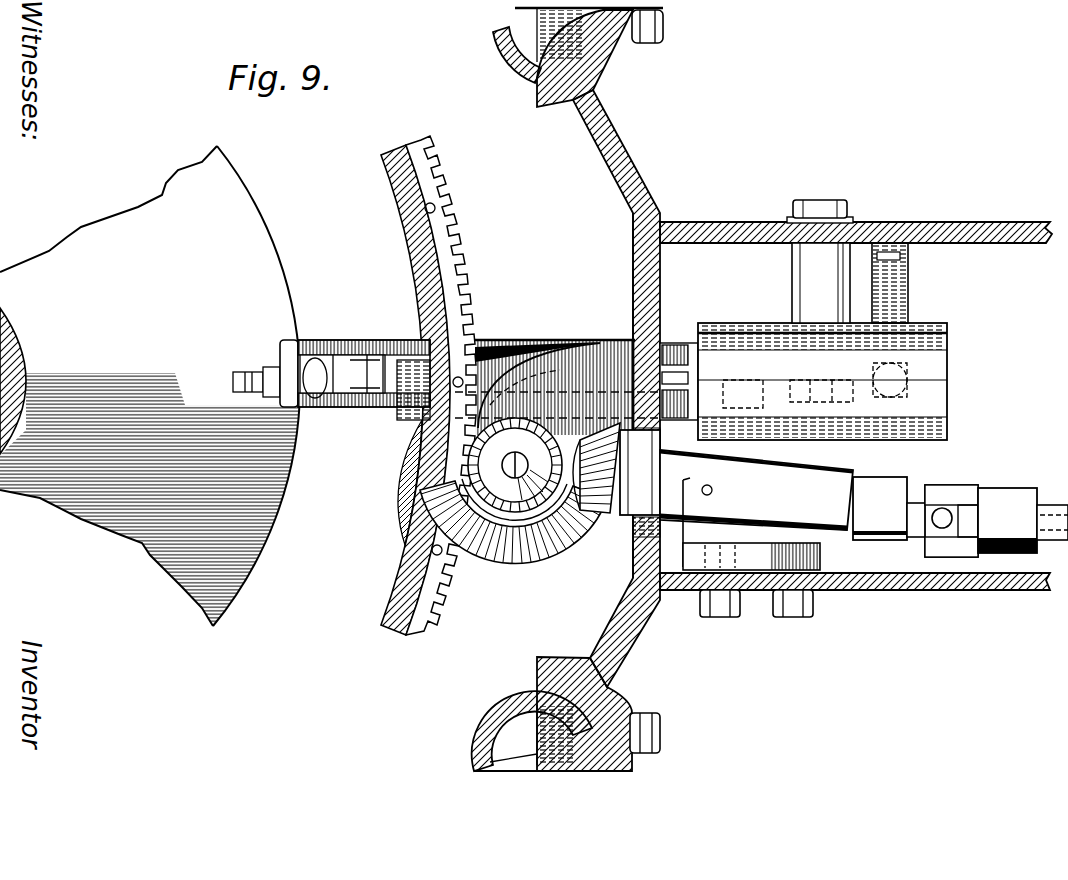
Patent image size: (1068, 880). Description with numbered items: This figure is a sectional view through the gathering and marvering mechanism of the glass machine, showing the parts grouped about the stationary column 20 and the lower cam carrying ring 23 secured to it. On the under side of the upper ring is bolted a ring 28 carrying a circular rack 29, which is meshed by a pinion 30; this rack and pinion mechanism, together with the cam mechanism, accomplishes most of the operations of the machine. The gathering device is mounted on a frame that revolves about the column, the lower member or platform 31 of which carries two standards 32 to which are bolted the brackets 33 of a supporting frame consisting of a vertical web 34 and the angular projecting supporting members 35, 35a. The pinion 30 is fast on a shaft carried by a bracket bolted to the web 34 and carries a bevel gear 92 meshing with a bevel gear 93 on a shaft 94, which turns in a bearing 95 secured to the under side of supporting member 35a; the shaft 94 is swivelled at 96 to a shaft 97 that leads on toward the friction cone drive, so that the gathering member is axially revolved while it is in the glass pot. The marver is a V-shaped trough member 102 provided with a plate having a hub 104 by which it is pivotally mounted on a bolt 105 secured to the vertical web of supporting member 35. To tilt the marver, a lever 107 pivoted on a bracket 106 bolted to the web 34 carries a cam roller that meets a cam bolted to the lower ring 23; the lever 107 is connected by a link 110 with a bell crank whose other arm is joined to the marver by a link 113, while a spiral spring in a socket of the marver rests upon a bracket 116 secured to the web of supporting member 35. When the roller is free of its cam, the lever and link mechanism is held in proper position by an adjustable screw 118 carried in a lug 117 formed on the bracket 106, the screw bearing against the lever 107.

The stationary column 20 is at (20, 381).
The cam carrying ring 23 is at (156, 515).
The ring 28 is at (403, 202).
The circular rack 29 is at (445, 184).
The pinion 30 is at (510, 363).
The platform 31 is at (617, 388).
The standards 32 is at (497, 63).
The brackets 33 is at (607, 58).
The vertical web 34 is at (642, 288).
The supporting member 35 is at (970, 209).
The supporting member 35a is at (897, 593).
The bevel gear 92 is at (548, 548).
The bevel gear 93 is at (603, 517).
The shaft 94 is at (880, 493).
The bearing 95 is at (827, 484).
The swivel 96 is at (943, 510).
The shaft 97 is at (1047, 507).
The marver member 102 is at (937, 347).
The hub 104 is at (837, 270).
The bolt 105 is at (814, 207).
The bracket 106 is at (555, 347).
The lever 107 is at (364, 379).
The link 110 is at (372, 397).
The link 113 is at (713, 393).
The bracket 116 is at (900, 307).
The lug 117 is at (290, 350).
The adjustable screw 118 is at (247, 378).